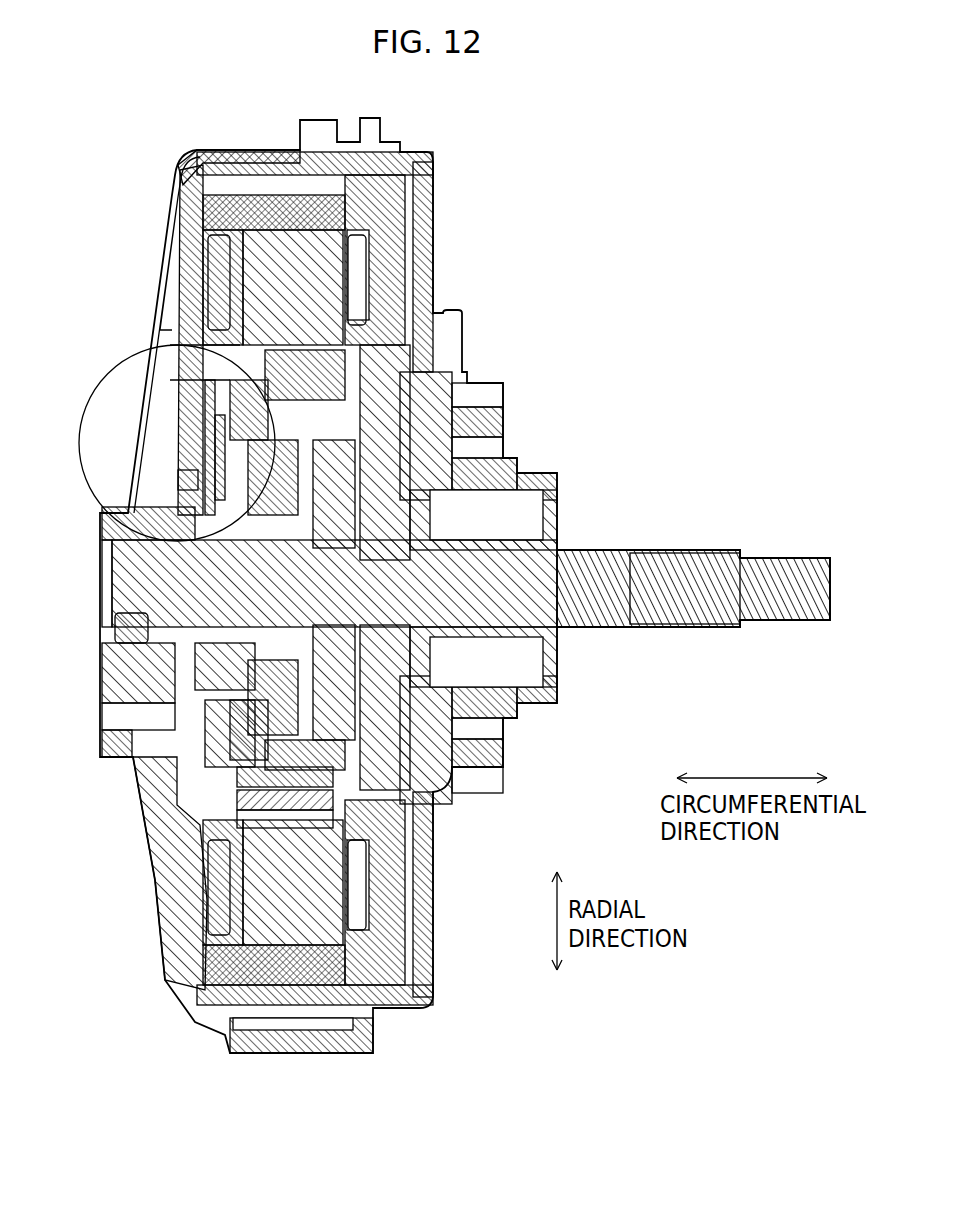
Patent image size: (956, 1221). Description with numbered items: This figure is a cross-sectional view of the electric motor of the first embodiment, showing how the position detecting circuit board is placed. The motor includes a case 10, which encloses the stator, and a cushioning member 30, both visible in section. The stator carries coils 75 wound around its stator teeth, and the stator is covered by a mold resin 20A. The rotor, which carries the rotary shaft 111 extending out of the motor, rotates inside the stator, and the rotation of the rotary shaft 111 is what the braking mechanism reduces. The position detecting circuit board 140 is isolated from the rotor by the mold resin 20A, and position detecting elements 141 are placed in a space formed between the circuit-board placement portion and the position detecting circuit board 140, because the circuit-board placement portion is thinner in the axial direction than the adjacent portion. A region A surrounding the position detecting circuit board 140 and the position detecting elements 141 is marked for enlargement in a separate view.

The case 10 is at (175, 915).
The mold resin 20A is at (168, 287).
The cushioning member 30 is at (420, 275).
The coils 75 is at (195, 236).
The rotary shaft 111 is at (800, 557).
The position detecting circuit board 140 is at (172, 430).
The position detecting elements 141 is at (170, 470).
The region A is at (88, 492).